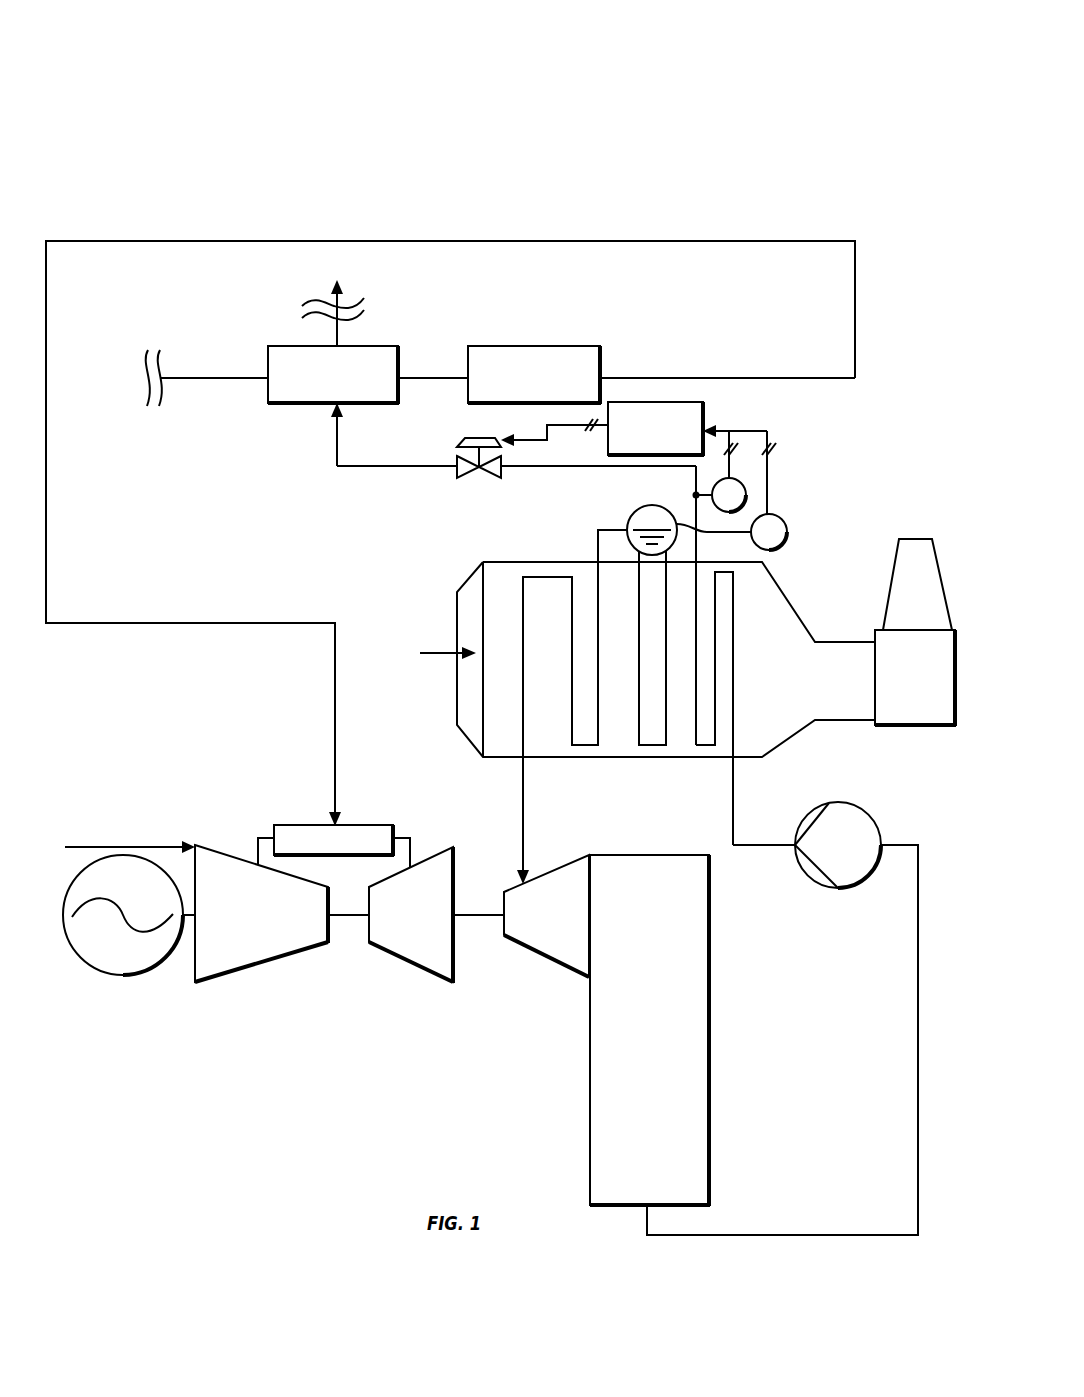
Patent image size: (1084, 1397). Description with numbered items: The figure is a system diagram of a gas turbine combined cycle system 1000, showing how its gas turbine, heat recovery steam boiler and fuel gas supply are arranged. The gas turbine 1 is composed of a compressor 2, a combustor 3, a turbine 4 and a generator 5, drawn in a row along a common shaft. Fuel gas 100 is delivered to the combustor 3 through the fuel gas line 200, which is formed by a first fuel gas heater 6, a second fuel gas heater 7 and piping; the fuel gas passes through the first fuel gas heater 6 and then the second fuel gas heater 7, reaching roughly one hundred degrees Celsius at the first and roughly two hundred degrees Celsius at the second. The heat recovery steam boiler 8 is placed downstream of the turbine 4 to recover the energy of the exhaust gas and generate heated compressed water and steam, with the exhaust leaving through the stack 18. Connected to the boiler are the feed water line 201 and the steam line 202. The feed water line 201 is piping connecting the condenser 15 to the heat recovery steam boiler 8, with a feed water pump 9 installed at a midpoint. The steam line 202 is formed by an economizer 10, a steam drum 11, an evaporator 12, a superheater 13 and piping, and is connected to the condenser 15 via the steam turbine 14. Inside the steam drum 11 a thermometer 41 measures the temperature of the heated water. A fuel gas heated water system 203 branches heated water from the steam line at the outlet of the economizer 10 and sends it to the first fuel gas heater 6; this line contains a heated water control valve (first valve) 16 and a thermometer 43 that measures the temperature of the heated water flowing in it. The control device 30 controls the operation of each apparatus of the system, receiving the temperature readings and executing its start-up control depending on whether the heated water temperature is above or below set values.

The gas turbine combined cycle system 1000 is at (216, 160).
The fuel gas line 200 is at (447, 241).
The fuel gas 100 is at (165, 341).
The first fuel gas heater 6 is at (388, 346).
The second fuel gas heater 7 is at (570, 320).
The control device 30 is at (733, 400).
The thermometer 43 is at (745, 481).
The thermometer 41 is at (787, 523).
The fuel gas heated water system 203 is at (338, 428).
The heated water control valve (first valve) 16 is at (458, 477).
The steam drum 11 is at (624, 514).
The evaporator 12 is at (637, 586).
The superheater 13 is at (537, 577).
The heat recovery steam boiler 8 is at (697, 772).
The economizer 10 is at (733, 598).
The stack 18 is at (903, 601).
The feed water pump 9 is at (883, 822).
The feed water line 201 is at (777, 848).
The condenser 15 is at (709, 1010).
The steam turbine 14 is at (537, 950).
The steam line 202 is at (512, 784).
The combustor 3 is at (356, 790).
The compressor 2 is at (228, 978).
The generator 5 is at (123, 975).
The turbine 4 is at (400, 958).
The gas turbine 1 is at (332, 1024).